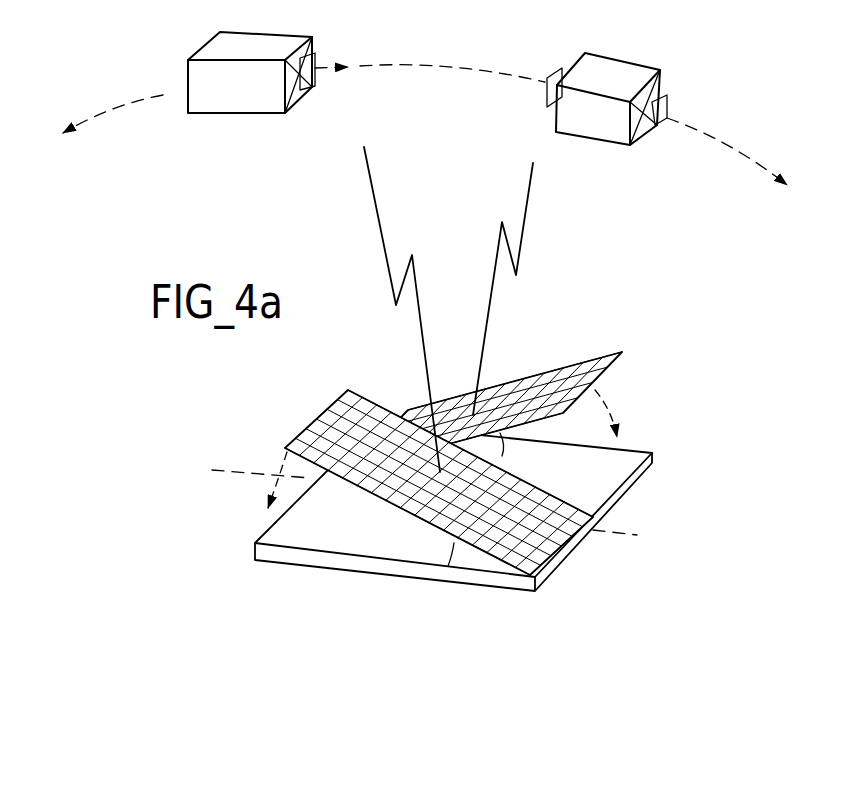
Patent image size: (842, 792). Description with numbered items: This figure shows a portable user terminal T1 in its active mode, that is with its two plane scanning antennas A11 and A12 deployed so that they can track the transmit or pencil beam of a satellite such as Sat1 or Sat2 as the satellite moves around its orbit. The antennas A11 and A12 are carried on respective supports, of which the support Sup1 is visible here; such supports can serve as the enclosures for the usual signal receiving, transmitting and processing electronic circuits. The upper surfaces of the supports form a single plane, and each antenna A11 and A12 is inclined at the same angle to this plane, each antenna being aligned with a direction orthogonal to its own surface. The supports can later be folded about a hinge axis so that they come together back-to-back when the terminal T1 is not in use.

The first satellite Sat1 is at (612, 145).
The second satellite Sat2 is at (221, 113).
The plane scanning antenna A11 is at (580, 358).
The plane scanning antenna A12 is at (285, 445).
The support Sup1 is at (295, 538).
The terminal T1 is at (350, 600).